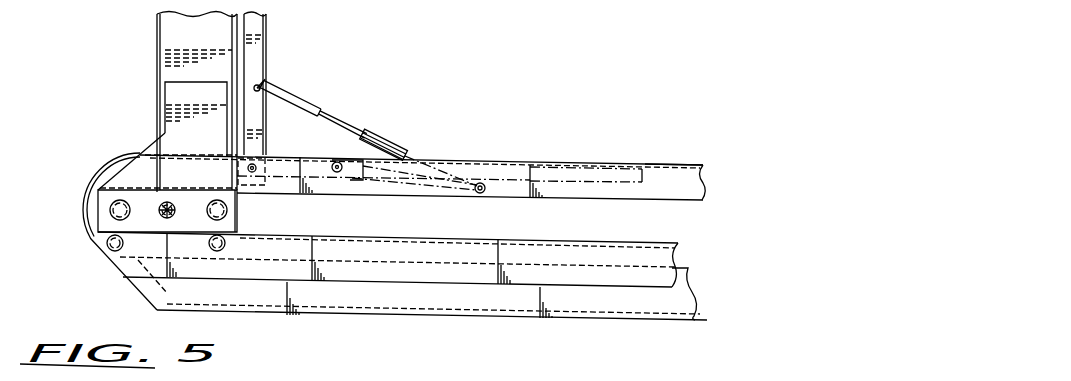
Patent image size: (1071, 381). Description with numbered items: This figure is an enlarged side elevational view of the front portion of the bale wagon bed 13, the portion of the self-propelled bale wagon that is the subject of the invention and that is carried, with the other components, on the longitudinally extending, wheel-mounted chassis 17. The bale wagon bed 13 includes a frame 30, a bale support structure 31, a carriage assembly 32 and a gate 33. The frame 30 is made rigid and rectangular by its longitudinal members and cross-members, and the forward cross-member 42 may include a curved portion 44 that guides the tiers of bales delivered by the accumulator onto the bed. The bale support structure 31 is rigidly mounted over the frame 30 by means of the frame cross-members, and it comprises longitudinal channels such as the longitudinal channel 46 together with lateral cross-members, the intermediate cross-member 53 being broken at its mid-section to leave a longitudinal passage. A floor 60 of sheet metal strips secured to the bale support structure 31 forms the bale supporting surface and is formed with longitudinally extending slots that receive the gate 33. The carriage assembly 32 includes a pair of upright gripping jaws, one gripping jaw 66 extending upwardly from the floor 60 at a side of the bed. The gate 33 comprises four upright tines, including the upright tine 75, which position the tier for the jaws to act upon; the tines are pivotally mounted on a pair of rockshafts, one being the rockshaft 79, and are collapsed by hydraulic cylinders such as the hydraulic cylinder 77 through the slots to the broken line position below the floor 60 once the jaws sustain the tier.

The bale wagon bed 13 is at (516, 114).
The chassis 17 is at (664, 303).
The frame 30 is at (692, 255).
The bale support structure 31 is at (716, 183).
The carriage assembly 32 is at (248, 212).
The gate 33 is at (302, 73).
The forward cross-member 42 is at (118, 163).
The curved portion 44 is at (85, 188).
The longitudinal channel 46 is at (684, 166).
The intermediate cross-member 53 is at (493, 181).
The floor 60 is at (636, 164).
The gripping jaw 66 is at (186, 73).
The upright tine 75 is at (265, 58).
The hydraulic cylinder 77 is at (412, 154).
The rockshaft 79 is at (336, 162).